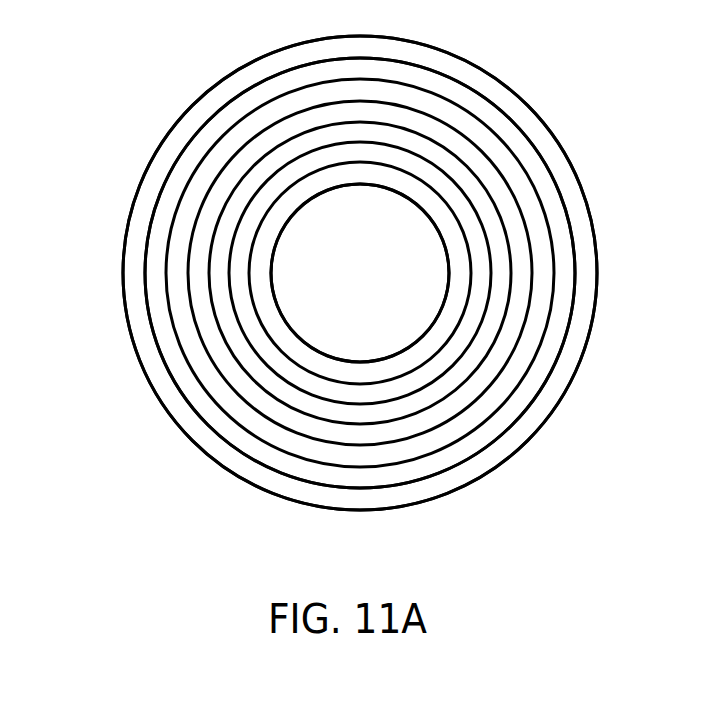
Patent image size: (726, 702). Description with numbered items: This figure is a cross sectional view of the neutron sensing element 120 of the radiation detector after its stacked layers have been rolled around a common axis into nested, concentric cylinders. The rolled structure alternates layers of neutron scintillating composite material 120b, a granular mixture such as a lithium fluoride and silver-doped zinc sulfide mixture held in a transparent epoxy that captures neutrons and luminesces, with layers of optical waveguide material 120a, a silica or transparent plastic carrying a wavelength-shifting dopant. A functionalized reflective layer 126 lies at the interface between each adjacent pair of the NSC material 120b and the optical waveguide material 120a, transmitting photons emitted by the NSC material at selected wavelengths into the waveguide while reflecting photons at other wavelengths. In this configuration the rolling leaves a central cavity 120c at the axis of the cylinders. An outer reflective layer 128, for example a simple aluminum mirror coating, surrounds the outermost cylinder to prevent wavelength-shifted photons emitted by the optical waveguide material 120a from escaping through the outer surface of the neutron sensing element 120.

The neutron sensing element 120 is at (142, 95).
The optical waveguide material 120a is at (450, 387).
The neutron scintillating composite material 120b is at (457, 197).
The cavity 120c is at (327, 323).
The functionalized reflective layer 126 is at (270, 146).
The outer reflective layer 128 is at (128, 228).